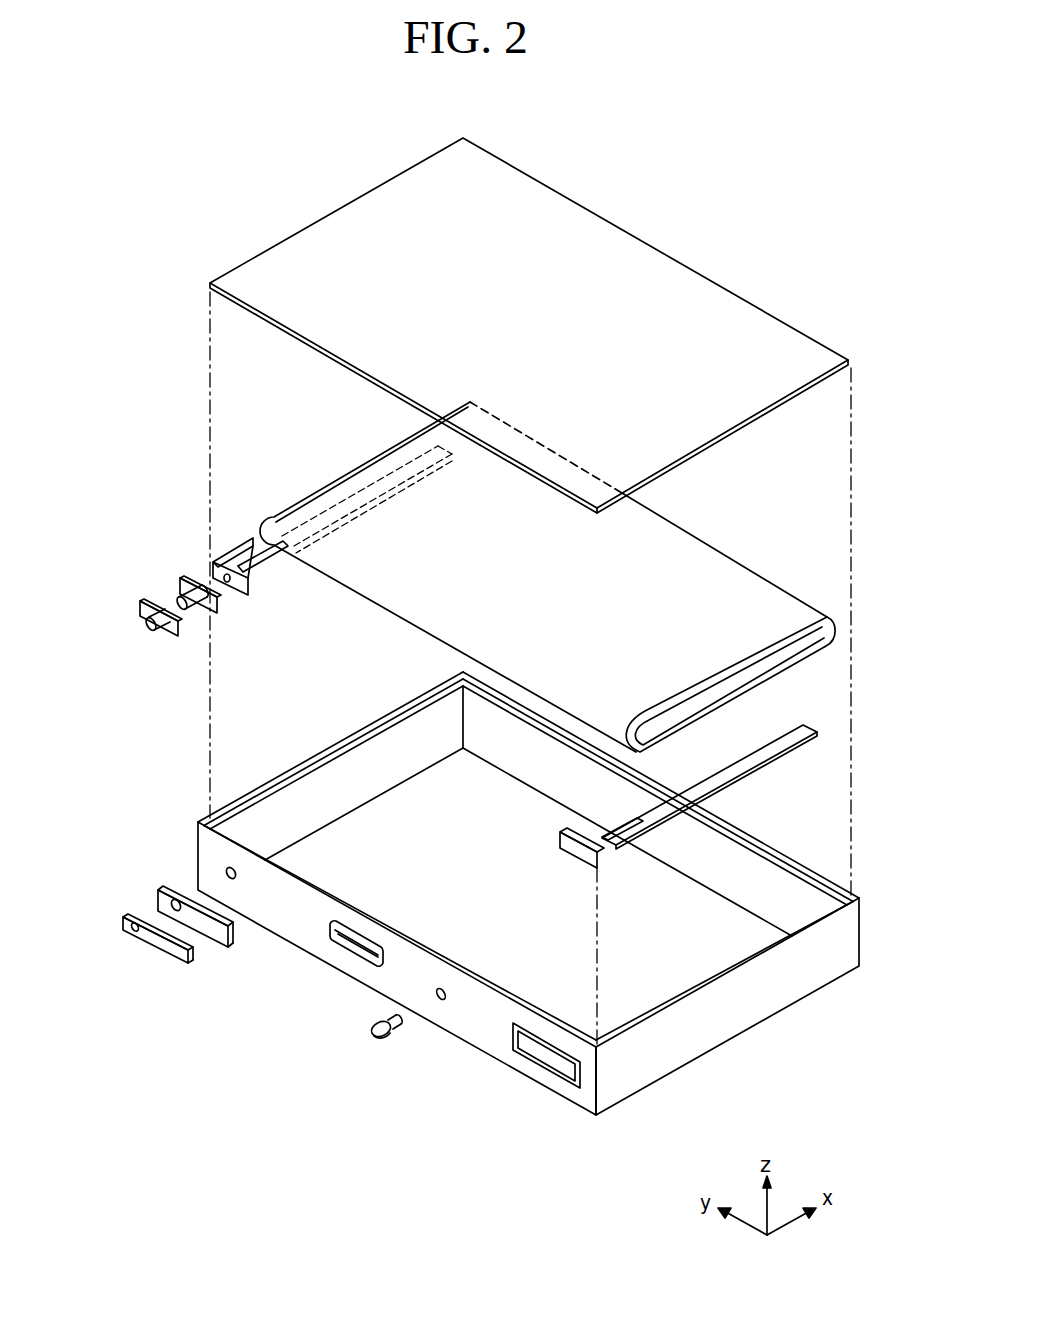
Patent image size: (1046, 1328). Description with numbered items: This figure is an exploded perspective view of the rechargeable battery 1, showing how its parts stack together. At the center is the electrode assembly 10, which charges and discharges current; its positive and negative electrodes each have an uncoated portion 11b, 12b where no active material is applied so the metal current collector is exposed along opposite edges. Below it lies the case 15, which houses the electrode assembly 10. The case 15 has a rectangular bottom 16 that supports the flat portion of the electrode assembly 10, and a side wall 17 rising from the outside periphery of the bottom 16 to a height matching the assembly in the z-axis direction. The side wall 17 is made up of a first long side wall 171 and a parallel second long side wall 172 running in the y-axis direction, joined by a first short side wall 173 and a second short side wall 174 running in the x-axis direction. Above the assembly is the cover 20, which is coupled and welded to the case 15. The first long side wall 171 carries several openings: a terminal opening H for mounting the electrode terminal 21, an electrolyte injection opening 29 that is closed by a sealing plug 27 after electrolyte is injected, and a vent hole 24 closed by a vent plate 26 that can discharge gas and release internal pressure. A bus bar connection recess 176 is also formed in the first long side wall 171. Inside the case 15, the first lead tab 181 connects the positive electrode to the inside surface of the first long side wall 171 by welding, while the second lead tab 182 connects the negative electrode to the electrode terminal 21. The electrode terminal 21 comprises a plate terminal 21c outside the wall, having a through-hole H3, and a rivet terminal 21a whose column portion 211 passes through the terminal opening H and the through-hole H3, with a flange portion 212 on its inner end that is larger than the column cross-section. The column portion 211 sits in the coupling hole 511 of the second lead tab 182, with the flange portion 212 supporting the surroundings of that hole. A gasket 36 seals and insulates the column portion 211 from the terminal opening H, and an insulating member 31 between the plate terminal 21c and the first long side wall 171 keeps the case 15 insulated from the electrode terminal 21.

The rechargeable battery 1 is at (317, 135).
The electrode assembly 10 is at (549, 577).
The uncoated portion of positive electrode 11b is at (778, 668).
The uncoated portion of negative electrode 12b is at (364, 462).
The case 15 is at (479, 659).
The bottom 16 is at (651, 980).
The side wall 17 is at (140, 287).
The first long side wall 171 is at (293, 920).
The second long side wall 172 is at (763, 838).
The first short side wall 173 is at (791, 985).
The second short side wall 174 is at (387, 716).
The bus bar connection recess 176 is at (544, 1067).
The first lead tab 181 is at (618, 852).
The second lead tab 182 is at (250, 560).
The cover 20 is at (641, 268).
The electrode terminal 21 is at (137, 951).
The rivet terminal 21a is at (183, 611).
The plate terminal 21c is at (137, 931).
The column portion 211 is at (192, 618).
The flange portion 212 is at (222, 608).
The vent hole 24 is at (353, 946).
The vent plate 26 is at (359, 956).
The sealing plug 27 is at (373, 1036).
The electrolyte injection opening 29 is at (439, 1004).
The insulating member 31 is at (167, 886).
The gasket 36 is at (126, 628).
The coupling hole 511 is at (236, 592).
The terminal opening H is at (226, 875).
The through-hole H3 is at (131, 940).